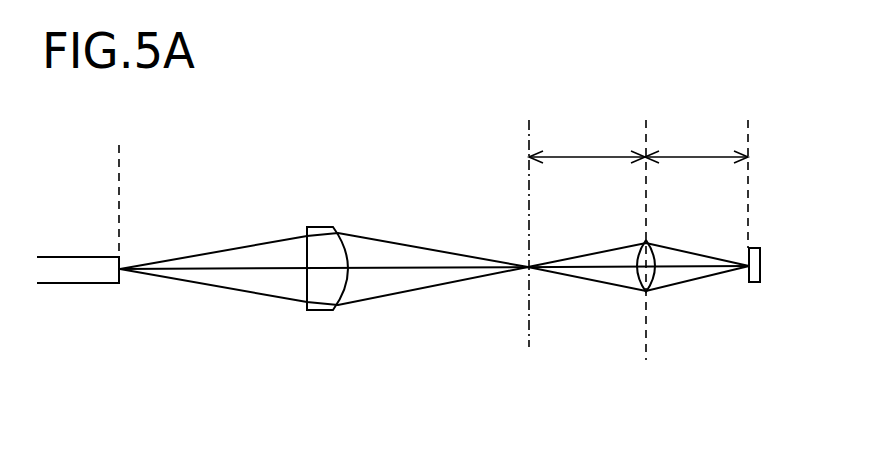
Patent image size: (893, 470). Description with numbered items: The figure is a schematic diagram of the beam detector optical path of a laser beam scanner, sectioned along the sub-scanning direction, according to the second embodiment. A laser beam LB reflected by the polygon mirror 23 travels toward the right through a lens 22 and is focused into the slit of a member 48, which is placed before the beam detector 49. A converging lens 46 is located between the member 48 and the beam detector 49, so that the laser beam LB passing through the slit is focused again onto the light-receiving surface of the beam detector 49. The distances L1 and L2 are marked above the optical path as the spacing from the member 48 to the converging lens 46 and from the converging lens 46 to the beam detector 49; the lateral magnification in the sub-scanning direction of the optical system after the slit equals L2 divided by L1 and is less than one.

The polygon mirror 23 is at (79, 256).
The laser beam LB is at (224, 291).
The collimator lens 22 is at (313, 312).
The member formed with a slit 48 is at (528, 198).
The converging lens 46 is at (637, 277).
The beam detector 49 is at (753, 284).
The distance L1 is at (587, 140).
The distance L2 is at (696, 140).